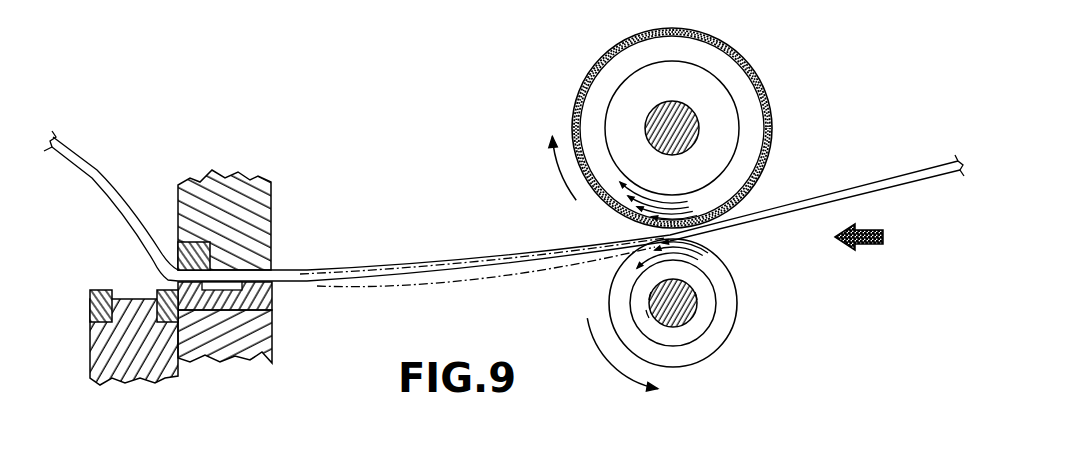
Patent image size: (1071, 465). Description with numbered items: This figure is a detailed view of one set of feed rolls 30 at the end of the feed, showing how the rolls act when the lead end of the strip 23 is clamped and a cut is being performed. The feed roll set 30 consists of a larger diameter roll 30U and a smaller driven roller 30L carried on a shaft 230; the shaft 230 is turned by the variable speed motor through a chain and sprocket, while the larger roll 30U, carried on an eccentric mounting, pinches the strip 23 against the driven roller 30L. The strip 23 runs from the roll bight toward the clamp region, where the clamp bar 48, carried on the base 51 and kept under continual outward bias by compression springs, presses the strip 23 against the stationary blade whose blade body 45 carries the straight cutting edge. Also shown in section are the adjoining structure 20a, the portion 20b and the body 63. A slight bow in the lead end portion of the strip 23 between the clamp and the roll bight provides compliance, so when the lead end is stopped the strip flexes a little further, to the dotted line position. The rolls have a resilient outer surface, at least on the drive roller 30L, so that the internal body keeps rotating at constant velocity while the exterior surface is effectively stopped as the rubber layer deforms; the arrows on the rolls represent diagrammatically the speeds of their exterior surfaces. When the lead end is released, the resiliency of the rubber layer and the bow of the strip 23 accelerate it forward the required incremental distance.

The metal strip 23 is at (836, 194).
The feed roll set 30 is at (676, 211).
The larger diameter roll 30U is at (726, 43).
The driven roller 30L is at (693, 320).
The shaft 230 is at (685, 300).
The blade body 45 is at (178, 187).
The clamp bar 48 is at (272, 300).
The base 51 is at (253, 327).
The frame member 20a is at (110, 352).
The web clamped portion 20b is at (177, 285).
The frame body 63 is at (138, 367).